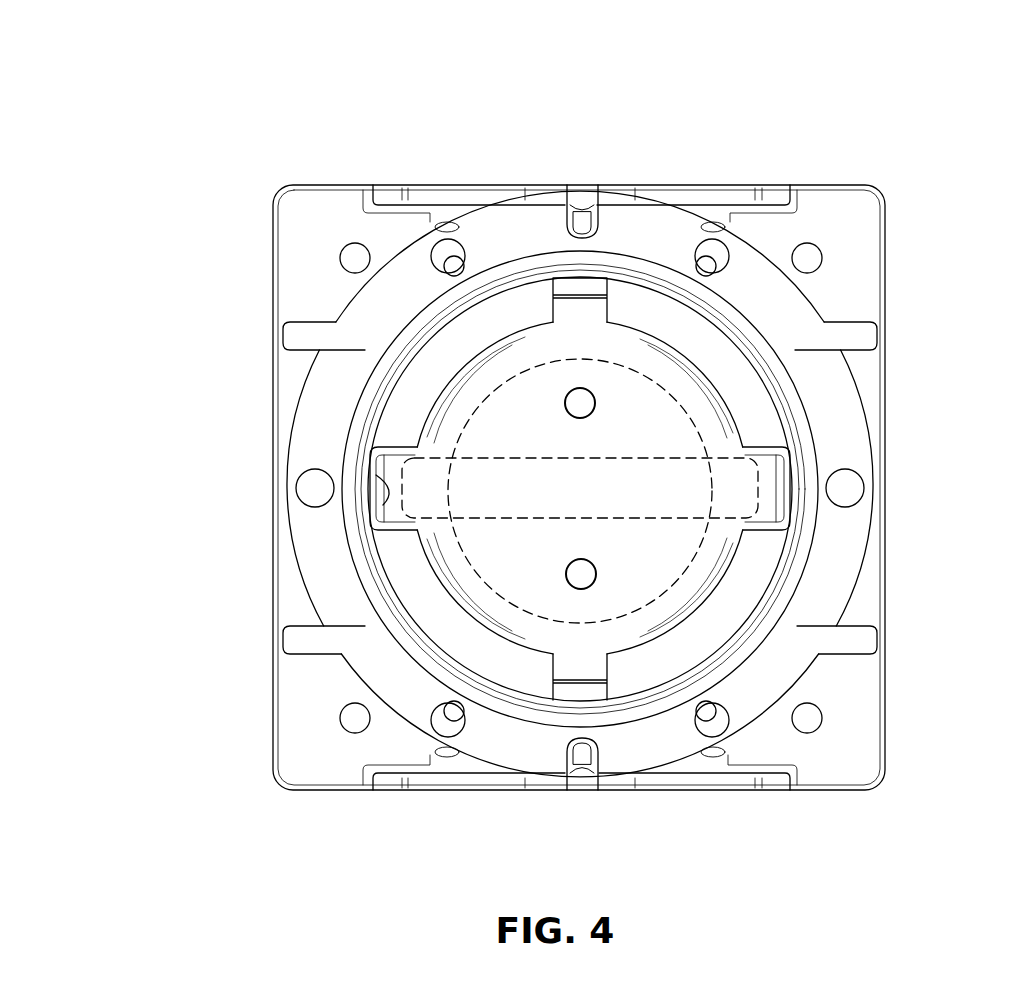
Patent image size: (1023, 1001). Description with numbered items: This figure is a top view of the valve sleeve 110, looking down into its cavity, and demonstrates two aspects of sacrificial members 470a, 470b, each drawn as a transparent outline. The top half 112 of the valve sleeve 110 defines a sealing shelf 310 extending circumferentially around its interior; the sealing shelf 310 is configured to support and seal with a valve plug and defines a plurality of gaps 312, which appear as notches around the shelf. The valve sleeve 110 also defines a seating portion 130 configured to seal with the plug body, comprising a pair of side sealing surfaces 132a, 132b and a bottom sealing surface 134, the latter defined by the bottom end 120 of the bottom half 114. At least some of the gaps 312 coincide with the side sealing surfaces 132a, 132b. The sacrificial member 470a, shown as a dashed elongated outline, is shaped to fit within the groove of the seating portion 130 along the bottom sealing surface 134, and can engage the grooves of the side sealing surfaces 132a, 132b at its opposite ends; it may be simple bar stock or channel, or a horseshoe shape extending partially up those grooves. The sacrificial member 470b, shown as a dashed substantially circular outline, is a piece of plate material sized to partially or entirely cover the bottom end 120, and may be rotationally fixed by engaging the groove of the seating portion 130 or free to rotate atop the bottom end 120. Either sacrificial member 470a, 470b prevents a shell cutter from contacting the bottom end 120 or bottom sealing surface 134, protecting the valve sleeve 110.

The valve sleeve 110 is at (205, 111).
The top half 112 is at (629, 398).
The sealing shelf 310 is at (700, 347).
The gaps 312 is at (562, 489).
The bottom half 114 is at (573, 494).
The bottom end 120 is at (573, 494).
The seating portion 130 is at (710, 664).
The bottom sealing surface 134 is at (710, 664).
The side sealing surface 132a is at (763, 457).
The side sealing surface 132b is at (378, 490).
The sacrificial member 470a is at (587, 518).
The sacrificial member 470b is at (470, 573).